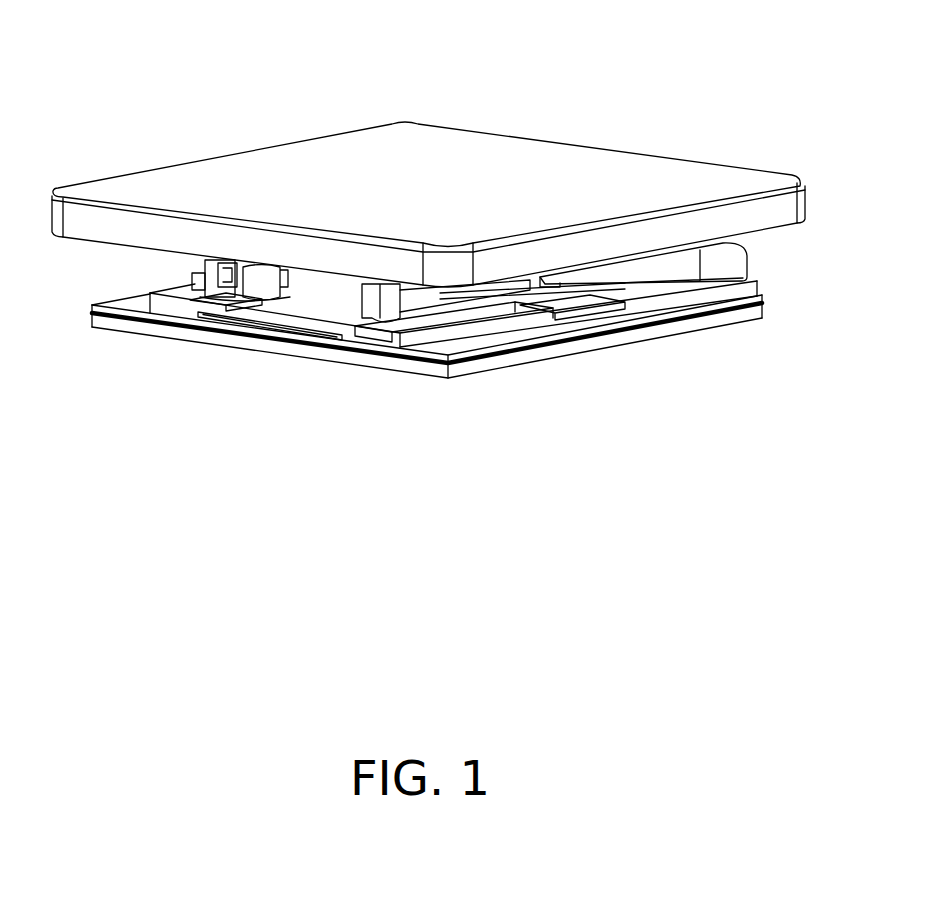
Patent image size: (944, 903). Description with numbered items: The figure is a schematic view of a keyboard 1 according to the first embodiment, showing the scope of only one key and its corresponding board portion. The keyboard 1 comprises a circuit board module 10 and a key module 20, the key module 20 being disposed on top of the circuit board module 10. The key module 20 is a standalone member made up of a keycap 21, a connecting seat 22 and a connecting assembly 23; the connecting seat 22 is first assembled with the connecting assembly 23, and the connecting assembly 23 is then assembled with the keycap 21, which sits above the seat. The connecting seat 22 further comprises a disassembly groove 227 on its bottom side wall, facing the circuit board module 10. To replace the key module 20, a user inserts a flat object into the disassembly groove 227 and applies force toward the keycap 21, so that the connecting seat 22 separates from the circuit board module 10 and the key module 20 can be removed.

The keyboard 1 is at (196, 66).
The circuit board module 10 is at (84, 323).
The key module 20 is at (346, 122).
The keycap 21 is at (227, 170).
The connecting seat 22 is at (643, 310).
The connecting assembly 23 is at (738, 262).
The disassembly groove 227 is at (263, 320).